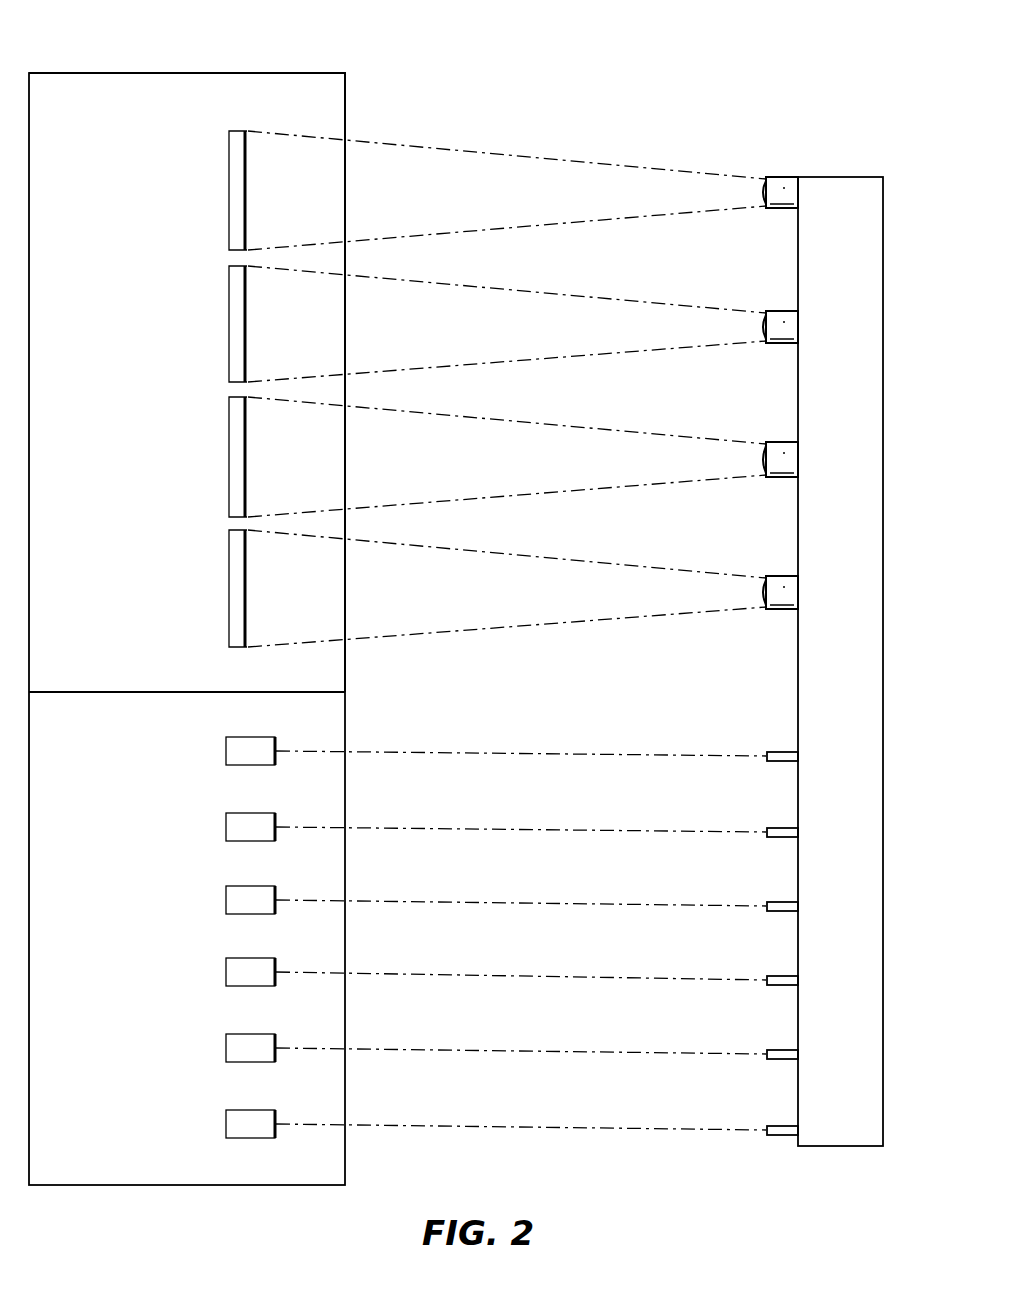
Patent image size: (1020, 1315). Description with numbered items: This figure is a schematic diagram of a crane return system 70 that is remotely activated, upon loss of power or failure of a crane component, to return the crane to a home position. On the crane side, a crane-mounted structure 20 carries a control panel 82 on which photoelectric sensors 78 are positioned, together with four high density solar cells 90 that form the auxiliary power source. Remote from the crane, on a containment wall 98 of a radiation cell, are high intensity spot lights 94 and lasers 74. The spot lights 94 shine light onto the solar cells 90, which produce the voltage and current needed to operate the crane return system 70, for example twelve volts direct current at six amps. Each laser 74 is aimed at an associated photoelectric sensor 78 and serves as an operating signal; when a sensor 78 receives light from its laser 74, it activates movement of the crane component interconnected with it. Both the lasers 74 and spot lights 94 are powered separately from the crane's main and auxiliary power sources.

The imaging device / housing 20 is at (146, 1192).
The crane return system 70 is at (521, 71).
The lasers 74 is at (782, 751).
The photoelectric sensors 78 is at (263, 765).
The control panel 82 is at (104, 73).
The high density solar cells 90 is at (237, 173).
The high intensity spot lights 94 is at (784, 197).
The containment wall 98 is at (862, 185).